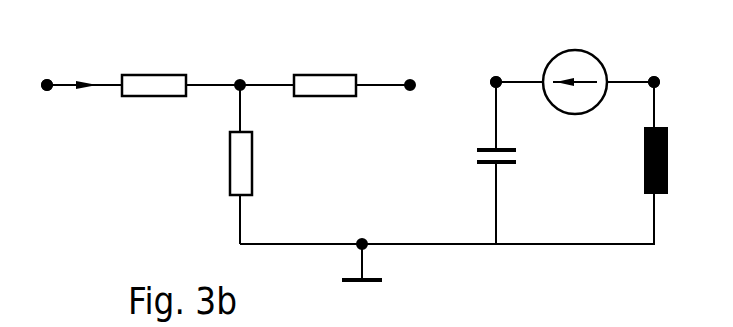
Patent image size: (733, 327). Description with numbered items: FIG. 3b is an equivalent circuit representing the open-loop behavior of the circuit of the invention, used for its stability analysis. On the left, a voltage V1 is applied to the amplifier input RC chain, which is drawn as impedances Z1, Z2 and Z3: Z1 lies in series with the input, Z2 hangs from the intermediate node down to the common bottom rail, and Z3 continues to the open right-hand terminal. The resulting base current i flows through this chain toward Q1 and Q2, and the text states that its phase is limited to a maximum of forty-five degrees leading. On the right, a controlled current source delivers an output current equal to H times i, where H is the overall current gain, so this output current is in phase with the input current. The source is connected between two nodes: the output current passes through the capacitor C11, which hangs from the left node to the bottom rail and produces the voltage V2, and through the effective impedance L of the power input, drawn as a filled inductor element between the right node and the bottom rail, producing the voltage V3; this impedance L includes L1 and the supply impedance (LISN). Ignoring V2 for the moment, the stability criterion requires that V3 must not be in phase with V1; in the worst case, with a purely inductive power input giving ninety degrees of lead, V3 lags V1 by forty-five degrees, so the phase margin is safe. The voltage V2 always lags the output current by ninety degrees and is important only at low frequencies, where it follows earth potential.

The impedance Z1 is at (154, 72).
The impedance Z2 is at (258, 163).
The impedance Z3 is at (325, 72).
The capacitor C11 is at (513, 159).
The effective impedance of the power input L is at (668, 160).
The voltage V1 is at (45, 96).
The voltage V2 is at (494, 72).
The voltage V3 is at (657, 72).
The base current i is at (86, 72).